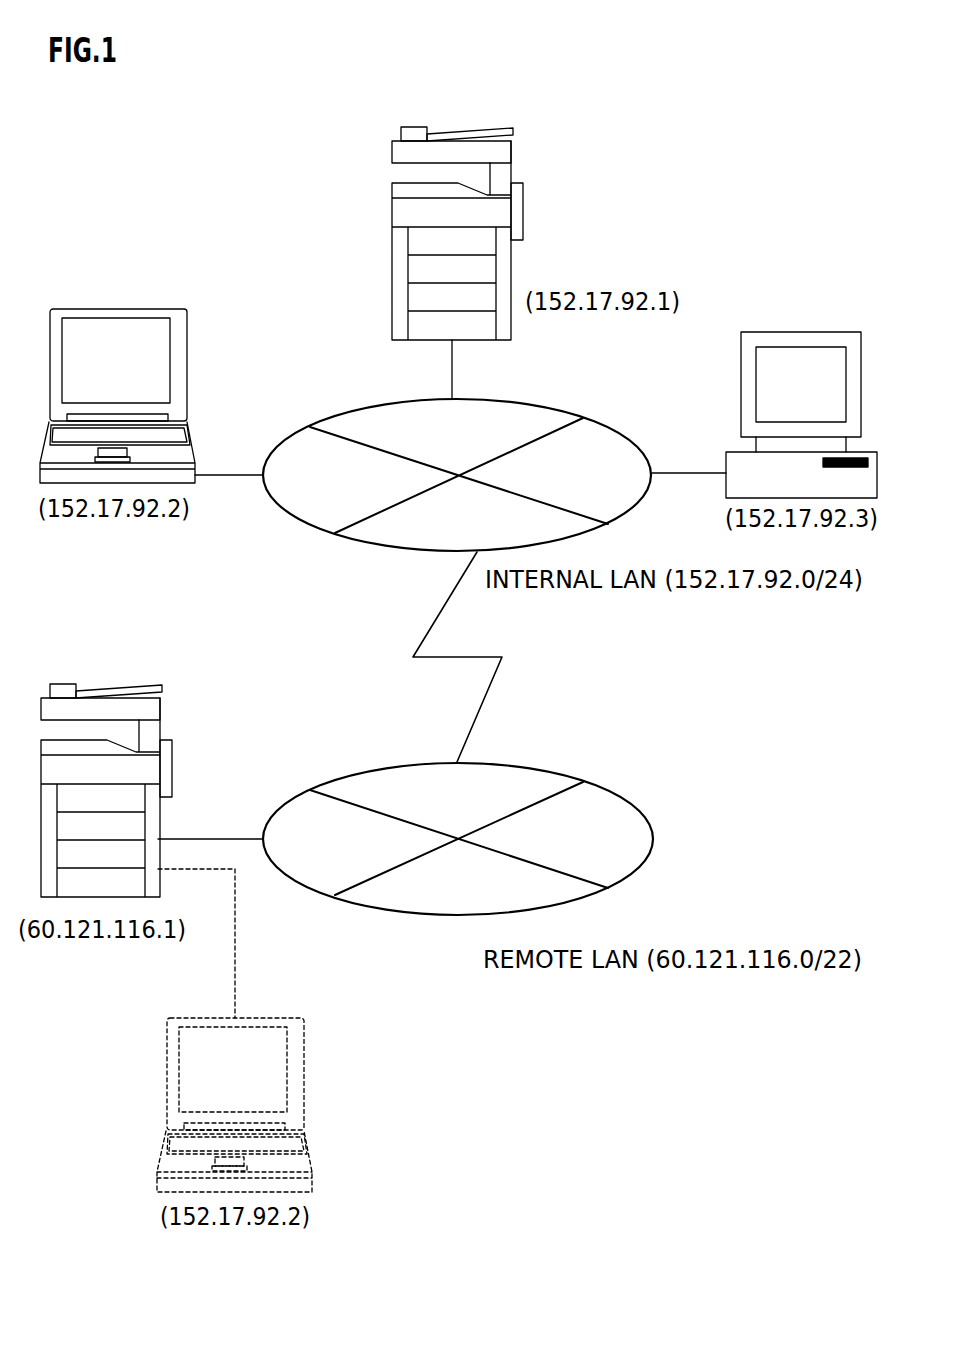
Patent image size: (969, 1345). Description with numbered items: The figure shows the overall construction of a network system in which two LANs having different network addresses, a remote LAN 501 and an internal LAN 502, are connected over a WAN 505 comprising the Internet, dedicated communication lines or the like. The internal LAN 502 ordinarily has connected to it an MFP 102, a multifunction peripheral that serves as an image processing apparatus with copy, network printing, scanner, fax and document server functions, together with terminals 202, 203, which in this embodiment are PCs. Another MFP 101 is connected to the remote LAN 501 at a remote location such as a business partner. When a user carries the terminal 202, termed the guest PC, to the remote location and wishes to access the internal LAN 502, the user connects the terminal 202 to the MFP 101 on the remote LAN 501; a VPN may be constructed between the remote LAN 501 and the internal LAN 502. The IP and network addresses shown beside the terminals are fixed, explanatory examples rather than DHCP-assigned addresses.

The MFP 101 is at (172, 772).
The MFP 102 is at (523, 215).
The terminal 202 is at (130, 307).
The terminal 203 is at (801, 332).
The LAN 501 is at (628, 798).
The LAN 502 is at (570, 412).
The WAN 505 is at (478, 713).